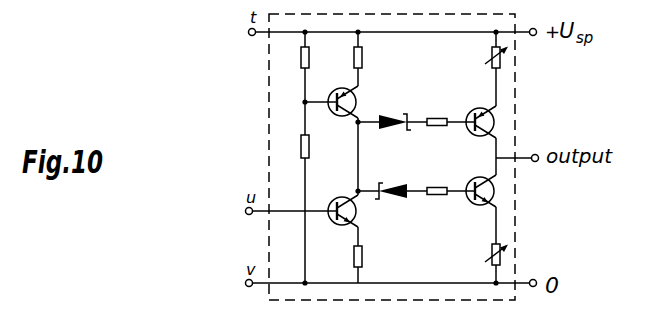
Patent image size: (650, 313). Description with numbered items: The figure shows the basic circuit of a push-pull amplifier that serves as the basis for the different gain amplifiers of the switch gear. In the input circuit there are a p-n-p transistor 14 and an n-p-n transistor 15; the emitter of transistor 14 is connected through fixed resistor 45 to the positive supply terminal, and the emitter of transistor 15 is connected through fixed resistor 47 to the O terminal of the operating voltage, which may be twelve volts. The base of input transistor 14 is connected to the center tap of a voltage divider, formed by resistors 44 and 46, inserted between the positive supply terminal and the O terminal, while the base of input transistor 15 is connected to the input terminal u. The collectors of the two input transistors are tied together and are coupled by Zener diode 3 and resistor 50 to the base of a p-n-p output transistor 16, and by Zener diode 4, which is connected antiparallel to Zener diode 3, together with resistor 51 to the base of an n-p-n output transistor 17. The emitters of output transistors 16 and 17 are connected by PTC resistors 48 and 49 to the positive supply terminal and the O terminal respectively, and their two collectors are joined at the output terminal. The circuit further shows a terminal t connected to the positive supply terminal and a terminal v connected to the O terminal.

The resistor R44 44 is at (322, 62).
The fixed resistor 45 is at (375, 61).
The resistor R46 46 is at (322, 147).
The fixed resistor 47 is at (378, 252).
The PTC-resistor 48 is at (481, 58).
The PTC-resistor 49 is at (478, 258).
The resistor R50 50 is at (440, 106).
The resistor 51 is at (440, 177).
The Zener-diode 3 is at (394, 139).
The Zener-diode 4 is at (392, 211).
The p-n-p transistor 14 is at (357, 99).
The n-p-n transistor 15 is at (331, 223).
The p-n-p output transistor 16 is at (470, 131).
The n-p-n output transistor 17 is at (468, 205).